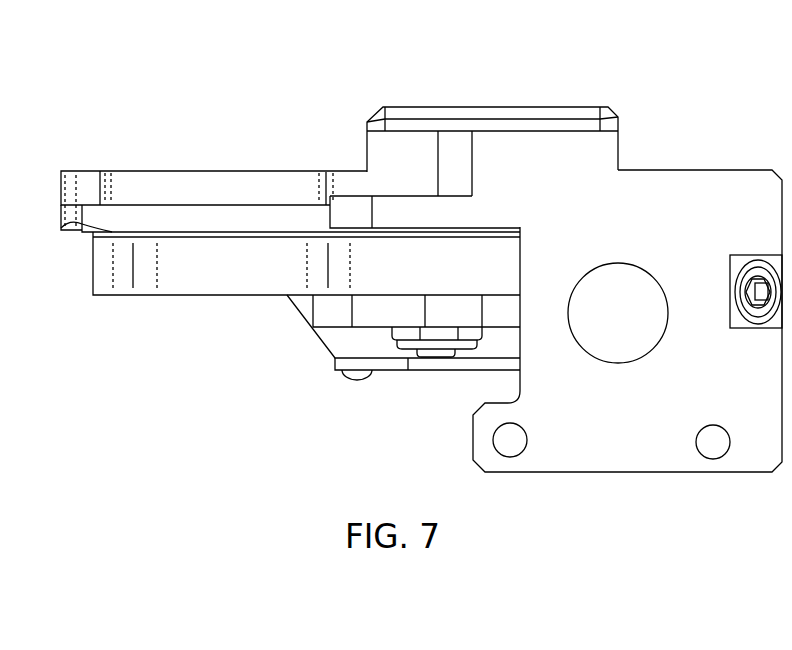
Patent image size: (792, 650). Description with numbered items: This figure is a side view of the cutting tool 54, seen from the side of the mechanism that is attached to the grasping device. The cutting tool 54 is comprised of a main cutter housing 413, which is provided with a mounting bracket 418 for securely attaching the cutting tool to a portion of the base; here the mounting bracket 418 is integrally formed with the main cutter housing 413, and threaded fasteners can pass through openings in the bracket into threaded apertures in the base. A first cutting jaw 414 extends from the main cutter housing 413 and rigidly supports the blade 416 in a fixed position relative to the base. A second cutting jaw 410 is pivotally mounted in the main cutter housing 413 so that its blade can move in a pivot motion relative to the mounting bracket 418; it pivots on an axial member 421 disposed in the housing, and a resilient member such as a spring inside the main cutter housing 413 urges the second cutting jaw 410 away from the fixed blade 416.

The cutting tool 54 is at (300, 402).
The second cutting jaw 410 is at (250, 270).
The main cutter housing 413 is at (690, 123).
The first cutting jaw 414 is at (110, 171).
The blade 416 is at (232, 218).
The mounting bracket 418 is at (533, 115).
The axial member 421 is at (435, 357).